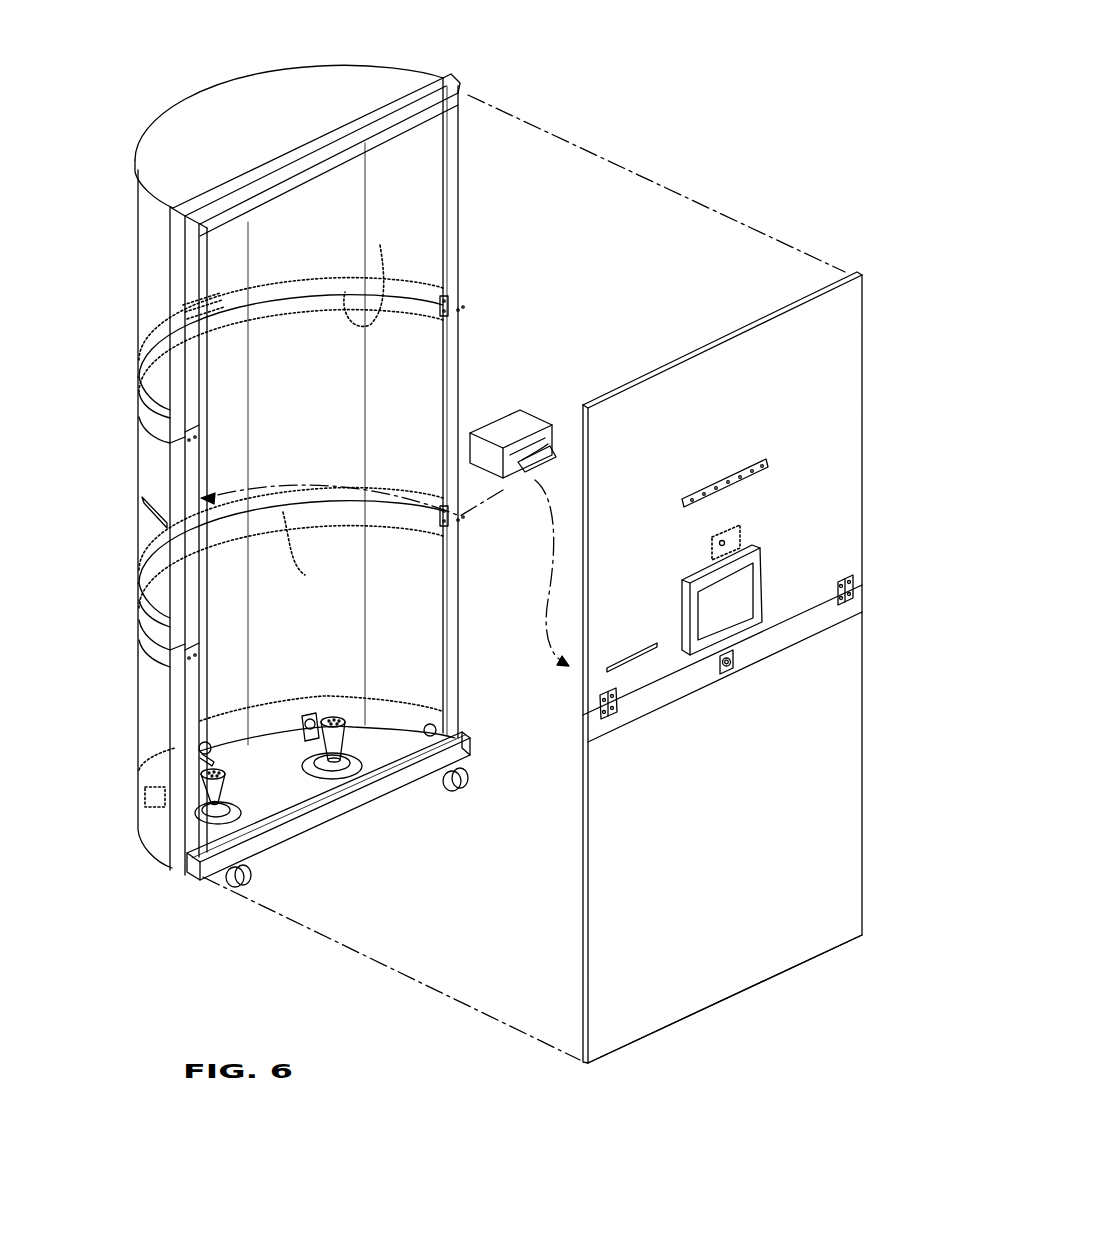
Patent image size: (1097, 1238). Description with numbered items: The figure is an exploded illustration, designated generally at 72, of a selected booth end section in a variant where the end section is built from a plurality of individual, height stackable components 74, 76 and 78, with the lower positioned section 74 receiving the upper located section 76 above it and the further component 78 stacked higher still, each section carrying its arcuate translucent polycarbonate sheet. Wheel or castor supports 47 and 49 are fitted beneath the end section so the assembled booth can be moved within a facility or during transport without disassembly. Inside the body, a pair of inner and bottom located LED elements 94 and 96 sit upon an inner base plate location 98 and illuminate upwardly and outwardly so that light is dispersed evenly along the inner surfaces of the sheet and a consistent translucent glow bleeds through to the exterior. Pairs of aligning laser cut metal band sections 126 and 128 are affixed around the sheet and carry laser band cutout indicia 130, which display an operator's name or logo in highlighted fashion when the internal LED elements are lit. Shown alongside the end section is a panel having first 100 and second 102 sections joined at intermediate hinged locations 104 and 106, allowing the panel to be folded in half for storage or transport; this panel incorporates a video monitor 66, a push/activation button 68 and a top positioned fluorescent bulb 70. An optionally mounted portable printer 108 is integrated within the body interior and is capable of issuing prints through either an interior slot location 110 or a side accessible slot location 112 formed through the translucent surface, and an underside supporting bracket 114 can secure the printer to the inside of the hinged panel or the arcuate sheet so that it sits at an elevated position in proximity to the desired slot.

The exploded illustration of selected booth end section 72 is at (668, 159).
The height stackable component 78 is at (153, 283).
The height stackable component 76 is at (157, 477).
The height stackable component 74 is at (153, 697).
The side accessible slot location 112 is at (144, 528).
The laser band cutout indicia 130 is at (187, 307).
The aligning band section 128 is at (340, 273).
The aligning band section 126 is at (262, 533).
The underside supporting bracket 114 is at (500, 484).
The portable printer 108 is at (507, 424).
The first section 100 is at (655, 450).
The second section 102 is at (638, 926).
The fluorescent bulb 70 is at (756, 462).
The push/activation button 68 is at (723, 542).
The video monitor 66 is at (748, 584).
The interior slot location 110 is at (640, 648).
The hinged location 106 is at (847, 606).
The hinged location 104 is at (610, 715).
The LED element 94 is at (232, 783).
The LED element 96 is at (340, 735).
The inner base plate location 98 is at (305, 783).
The castor support 49 is at (466, 775).
The castor support 47 is at (248, 866).